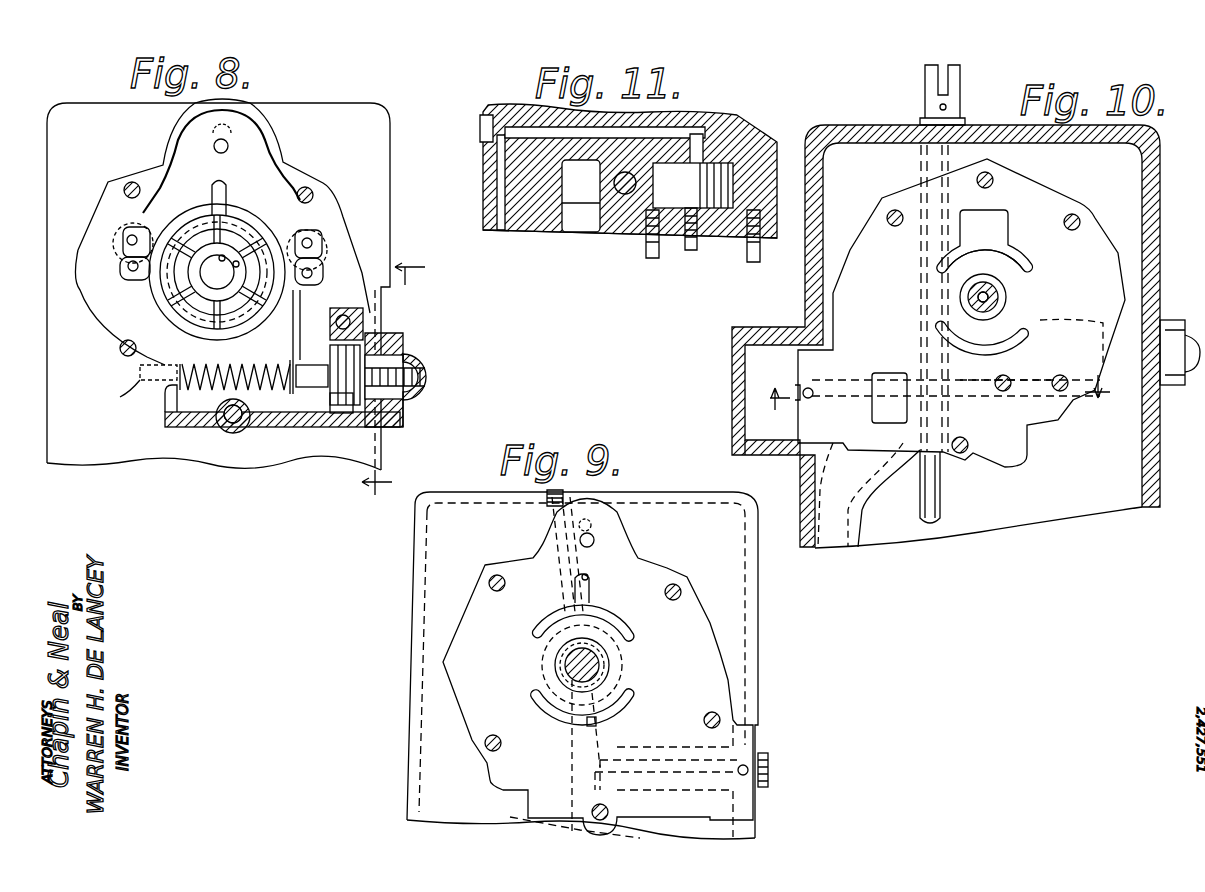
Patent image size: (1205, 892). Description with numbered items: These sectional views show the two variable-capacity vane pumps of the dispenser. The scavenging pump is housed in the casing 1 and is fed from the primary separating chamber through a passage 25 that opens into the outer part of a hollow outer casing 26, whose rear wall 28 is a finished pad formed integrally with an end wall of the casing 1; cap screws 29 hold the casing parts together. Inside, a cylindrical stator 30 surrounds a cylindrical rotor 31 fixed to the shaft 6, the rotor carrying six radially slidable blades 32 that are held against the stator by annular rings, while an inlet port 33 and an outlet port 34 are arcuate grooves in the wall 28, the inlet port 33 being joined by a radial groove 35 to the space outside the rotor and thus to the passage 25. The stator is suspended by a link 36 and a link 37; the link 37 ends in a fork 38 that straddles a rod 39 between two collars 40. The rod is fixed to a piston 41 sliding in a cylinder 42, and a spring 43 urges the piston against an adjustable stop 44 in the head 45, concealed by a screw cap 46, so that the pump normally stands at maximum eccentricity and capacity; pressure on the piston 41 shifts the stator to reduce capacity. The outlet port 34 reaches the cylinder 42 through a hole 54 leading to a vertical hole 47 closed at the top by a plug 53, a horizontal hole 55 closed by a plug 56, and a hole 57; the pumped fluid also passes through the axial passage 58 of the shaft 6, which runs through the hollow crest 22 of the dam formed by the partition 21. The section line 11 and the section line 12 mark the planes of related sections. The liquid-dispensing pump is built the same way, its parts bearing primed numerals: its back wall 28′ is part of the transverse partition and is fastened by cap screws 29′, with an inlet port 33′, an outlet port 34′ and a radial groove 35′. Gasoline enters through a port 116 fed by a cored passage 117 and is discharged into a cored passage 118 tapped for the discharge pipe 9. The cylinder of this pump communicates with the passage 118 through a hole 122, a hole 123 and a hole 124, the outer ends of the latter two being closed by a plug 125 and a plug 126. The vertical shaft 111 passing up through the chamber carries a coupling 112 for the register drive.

In FIG. 8, the casing 1 is at (386, 162).
In FIG. 10, the casing 1 is at (1160, 185).
In FIG. 9, the casing 1 is at (748, 633).
In FIG. 8, the shaft 6 is at (205, 276).
In FIG. 10, the shaft 6 is at (1005, 298).
In FIG. 9, the shaft 6 is at (592, 670).
In FIG. 10, the discharge pipe 9 is at (1180, 320).
In FIG. 10, the section line 11— 11 is at (939, 395).
In FIG. 8, the section line 12— 12 is at (395, 376).
In FIG. 9, the partition 21 is at (525, 815).
In FIG. 9, the hollow cylindrical portion 22 is at (620, 656).
In FIG. 8, the passage 25 is at (230, 143).
In FIG. 9, the passage 25 is at (594, 540).
In FIG. 8, the hollow outer casing 26 is at (110, 207).
In FIG. 9, the rear wall 28 is at (690, 612).
In FIG. 11, the back wall 28′ is at (542, 248).
In FIG. 10, the back wall 28′ is at (1090, 232).
In FIG. 8, the cap screws 29 is at (126, 183).
In FIG. 9, the cap screws 29 is at (497, 592).
In FIG. 11, the cap screws 29′ is at (752, 264).
In FIG. 10, the cap screws 29′ is at (995, 178).
In FIG. 8, the cylindrical stator 30 is at (246, 236).
In FIG. 8, the cylindrical rotor 31 is at (258, 250).
In FIG. 8, the radially slidable blades 32 is at (182, 318).
In FIG. 8, the inlet port 33 is at (190, 235).
In FIG. 9, the inlet port 33 is at (617, 632).
In FIG. 10, the inlet port 33′ is at (1030, 262).
In FIG. 9, the outlet port 34 is at (545, 710).
In FIG. 10, the outlet port 34′ is at (1030, 338).
In FIG. 8, the radial groove 35 is at (212, 184).
In FIG. 9, the radial groove 35 is at (590, 586).
In FIG. 10, the radial groove 35′ is at (1000, 225).
In FIG. 8, the link 36 is at (120, 253).
In FIG. 8, the link 37 is at (318, 245).
In FIG. 8, the fork 38 is at (318, 392).
In FIG. 8, the rod 39 is at (138, 397).
In FIG. 8, the collars 40 is at (305, 368).
In FIG. 8, the piston 41 is at (336, 424).
In FIG. 8, the cylinder 42 is at (372, 352).
In FIG. 8, the spring 43 is at (210, 397).
In FIG. 8, the adjustable stop 44 is at (428, 380).
In FIG. 8, the head 45 is at (388, 350).
In FIG. 8, the screw cap 46 is at (428, 368).
In FIG. 9, the hole 47 is at (570, 573).
In FIG. 9, the plug 53 is at (540, 510).
In FIG. 9, the hole 54 is at (600, 722).
In FIG. 9, the hole 55 is at (655, 780).
In FIG. 9, the plug 56 is at (770, 770).
In FIG. 8, the hole 57 is at (408, 404).
In FIG. 9, the hole 57 is at (747, 764).
In FIG. 10, the axial passage 58 is at (987, 292).
In FIG. 11, the shaft 111 is at (624, 196).
In FIG. 10, the shaft 111 is at (943, 507).
In FIG. 10, the coupling 112 is at (962, 88).
In FIG. 11, the port 116 is at (580, 205).
In FIG. 10, the port 116 is at (892, 370).
In FIG. 11, the cored passage 117 is at (578, 190).
In FIG. 10, the cored passage 117 is at (855, 530).
In FIG. 11, the cored passage 118 is at (693, 185).
In FIG. 10, the cored passage 118 is at (1108, 315).
In FIG. 11, the hole 122 is at (500, 186).
In FIG. 10, the hole 122 is at (814, 388).
In FIG. 11, the hole 123 is at (522, 125).
In FIG. 10, the hole 123 is at (824, 398).
In FIG. 11, the hole 124 is at (700, 136).
In FIG. 11, the plug 125 is at (482, 125).
In FIG. 10, the plug 125 is at (748, 452).
In FIG. 11, the plug 126 is at (690, 250).
In FIG. 10, the plug 126 is at (1003, 392).